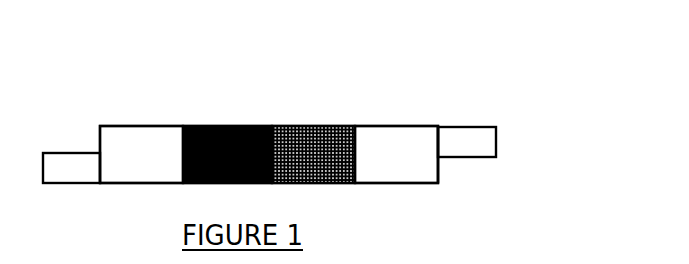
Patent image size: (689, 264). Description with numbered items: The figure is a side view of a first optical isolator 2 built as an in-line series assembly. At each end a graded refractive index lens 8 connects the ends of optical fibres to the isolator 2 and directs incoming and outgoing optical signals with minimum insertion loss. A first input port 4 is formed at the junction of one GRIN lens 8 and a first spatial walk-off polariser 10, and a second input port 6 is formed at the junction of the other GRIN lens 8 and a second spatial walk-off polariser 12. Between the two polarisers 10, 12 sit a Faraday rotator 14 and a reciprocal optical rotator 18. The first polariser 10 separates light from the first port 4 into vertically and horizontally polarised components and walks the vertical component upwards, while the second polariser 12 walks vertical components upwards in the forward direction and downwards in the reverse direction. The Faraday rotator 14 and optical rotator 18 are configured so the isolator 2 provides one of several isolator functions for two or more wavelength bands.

The optical isolator 2 is at (550, 115).
The first input port 4 is at (98, 168).
The second input port 6 is at (438, 141).
The graded refractive index (GRIN) lens 8 is at (496, 127).
The first spatial walk-off polariser 10 is at (147, 125).
The second spatial walk-off polariser 12 is at (394, 125).
The Faraday rotator 14 is at (216, 125).
The reciprocal optical rotator 18 is at (318, 125).